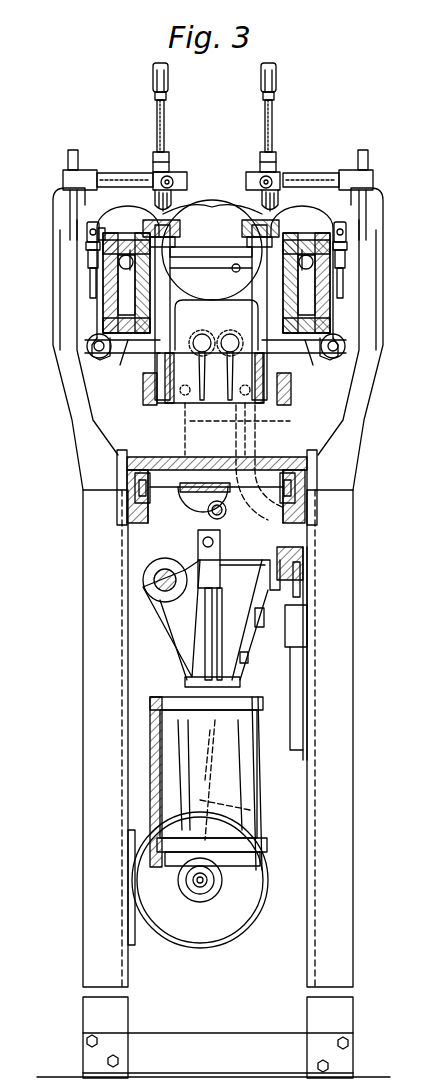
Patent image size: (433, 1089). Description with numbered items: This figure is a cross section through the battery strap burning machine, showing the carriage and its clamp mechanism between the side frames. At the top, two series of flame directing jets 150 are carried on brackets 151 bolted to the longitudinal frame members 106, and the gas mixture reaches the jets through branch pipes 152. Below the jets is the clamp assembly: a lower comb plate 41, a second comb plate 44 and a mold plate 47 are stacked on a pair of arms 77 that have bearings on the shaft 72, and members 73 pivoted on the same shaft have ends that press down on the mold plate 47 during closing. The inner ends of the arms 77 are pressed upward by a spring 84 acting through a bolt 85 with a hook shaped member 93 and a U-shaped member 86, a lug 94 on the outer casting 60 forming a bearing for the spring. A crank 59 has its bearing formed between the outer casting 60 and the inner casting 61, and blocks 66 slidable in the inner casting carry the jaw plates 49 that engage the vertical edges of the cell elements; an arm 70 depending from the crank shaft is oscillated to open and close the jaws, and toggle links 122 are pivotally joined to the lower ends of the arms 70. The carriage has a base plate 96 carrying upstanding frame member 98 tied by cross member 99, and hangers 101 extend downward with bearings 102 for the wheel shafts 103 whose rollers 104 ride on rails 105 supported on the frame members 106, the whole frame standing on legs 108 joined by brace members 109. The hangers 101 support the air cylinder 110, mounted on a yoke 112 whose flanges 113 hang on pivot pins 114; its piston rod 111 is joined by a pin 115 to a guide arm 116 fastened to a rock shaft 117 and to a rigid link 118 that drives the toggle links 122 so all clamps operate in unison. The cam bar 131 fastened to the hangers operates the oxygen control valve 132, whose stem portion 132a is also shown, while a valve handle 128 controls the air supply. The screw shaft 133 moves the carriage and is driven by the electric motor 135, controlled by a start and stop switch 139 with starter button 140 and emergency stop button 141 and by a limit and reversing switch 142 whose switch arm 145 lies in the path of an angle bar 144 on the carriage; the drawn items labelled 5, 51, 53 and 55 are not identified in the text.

The adjusting screw 5 is at (50, 256).
The lower comb plate 41 is at (176, 242).
The second comb plate 44 is at (180, 226).
The mold plate 47 is at (178, 215).
The jaw plates 49 is at (157, 330).
The base block 51 is at (213, 403).
The housing 53 is at (160, 308).
The pin 55 is at (239, 279).
The crank 59 is at (185, 272).
The outer casting 60 is at (105, 304).
The inner casting 61 is at (170, 296).
The blocks 66 is at (125, 358).
The arm 70 is at (92, 332).
The shaft 72 is at (153, 195).
The members 73 is at (115, 210).
The arms 77 is at (211, 256).
The spring 84 is at (88, 280).
The bolt 85 is at (95, 293).
The U-shaped member 86 is at (86, 245).
The hook shaped member 93 is at (88, 228).
The lug 94 is at (98, 240).
The base plate 96 is at (226, 458).
The frame member 98 is at (150, 405).
The cross member 99 is at (291, 400).
The hangers 101 is at (190, 653).
The bearings 102 is at (162, 470).
The wheel shafts 103 is at (235, 486).
The rollers 104 is at (135, 490).
The rails 105 is at (124, 460).
The longitudinal frame members 106 is at (130, 466).
The legs 108 is at (83, 901).
The brace members 109 is at (178, 1043).
The air cylinder 110 is at (240, 786).
The piston rod 111 is at (205, 620).
The yoke 112 is at (155, 770).
The flanges 113 is at (262, 815).
The pivot pins 114 is at (214, 780).
The pin 115 is at (221, 546).
The guide arm 116 is at (165, 565).
The rock shaft 117 is at (154, 580).
The rigid link 118 is at (254, 421).
The toggle links 122 is at (140, 356).
The handle 128 is at (12, 657).
The cam bar 131 is at (305, 554).
The oxygen control valve 132 is at (307, 622).
The valve stem 132a is at (300, 575).
The screw shaft 133 is at (205, 520).
The electric motor 135 is at (203, 930).
The start and stop switch 139 is at (12, 775).
The starter button 140 is at (12, 752).
The emergency stop button 141 is at (12, 717).
The limit and reversing switch 142 is at (293, 680).
The angle bar 144 is at (268, 600).
The switch arm 145 is at (250, 628).
The flame directing jets 150 is at (248, 205).
The brackets 151 is at (58, 388).
The branch pipes 152 is at (264, 124).